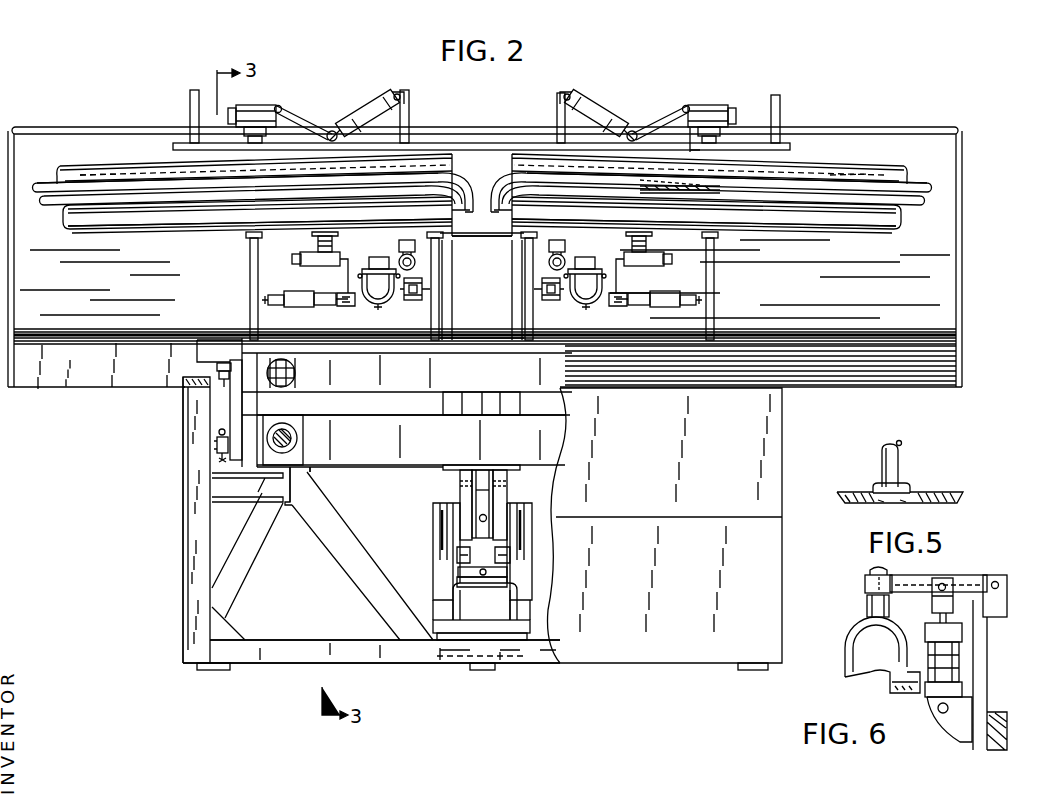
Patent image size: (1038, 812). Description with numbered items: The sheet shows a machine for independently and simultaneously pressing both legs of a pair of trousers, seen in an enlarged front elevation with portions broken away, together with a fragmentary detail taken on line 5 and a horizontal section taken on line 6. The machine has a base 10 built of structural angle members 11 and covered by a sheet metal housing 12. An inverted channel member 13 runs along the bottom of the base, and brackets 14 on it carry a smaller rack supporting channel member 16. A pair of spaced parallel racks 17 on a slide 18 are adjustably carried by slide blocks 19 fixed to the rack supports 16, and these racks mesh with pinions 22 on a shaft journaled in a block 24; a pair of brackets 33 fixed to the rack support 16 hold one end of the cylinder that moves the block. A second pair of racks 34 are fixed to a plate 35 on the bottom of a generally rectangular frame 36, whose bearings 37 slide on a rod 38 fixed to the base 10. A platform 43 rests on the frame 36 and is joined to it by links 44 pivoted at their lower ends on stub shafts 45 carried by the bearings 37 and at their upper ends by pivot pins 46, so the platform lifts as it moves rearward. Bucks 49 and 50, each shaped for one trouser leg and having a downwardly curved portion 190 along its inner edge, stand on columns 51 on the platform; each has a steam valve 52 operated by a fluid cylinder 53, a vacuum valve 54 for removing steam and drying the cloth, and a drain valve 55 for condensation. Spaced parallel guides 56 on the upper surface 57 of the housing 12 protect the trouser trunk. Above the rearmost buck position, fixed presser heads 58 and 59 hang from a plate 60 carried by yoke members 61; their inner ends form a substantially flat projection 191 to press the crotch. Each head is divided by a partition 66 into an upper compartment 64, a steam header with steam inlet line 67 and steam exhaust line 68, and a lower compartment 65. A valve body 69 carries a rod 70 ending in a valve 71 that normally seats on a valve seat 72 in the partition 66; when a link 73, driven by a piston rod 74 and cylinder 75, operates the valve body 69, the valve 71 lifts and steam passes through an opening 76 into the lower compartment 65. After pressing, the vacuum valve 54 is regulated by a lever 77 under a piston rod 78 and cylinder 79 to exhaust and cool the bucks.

In FIG. 2, the section line 5— 5 is at (755, 139).
In FIG. 2, the section line 6— 6 is at (359, 255).
In FIG. 2, the base 10 is at (168, 582).
In FIG. 2, the structural angle members 11 is at (190, 535).
In FIG. 2, the sheet metal housing 12 is at (772, 590).
In FIG. 2, the inverted channel member 13 is at (452, 645).
In FIG. 2, the brackets 14 is at (448, 609).
In FIG. 2, the rack supporting channel member 16 is at (466, 590).
In FIG. 2, the spaced parallel racks 17 is at (500, 552).
In FIG. 2, the slide 18 is at (458, 572).
In FIG. 2, the slide blocks 19 is at (484, 582).
In FIG. 2, the pinions 22 is at (478, 495).
In FIG. 2, the block 24 is at (489, 508).
In FIG. 2, the brackets 33 is at (442, 580).
In FIG. 2, the second pair of spaced parallel racks 34 is at (460, 479).
In FIG. 2, the plate 35 is at (482, 464).
In FIG. 2, the generally rectangular frame 36 is at (375, 470).
In FIG. 2, the bushings or bearings 37 is at (300, 418).
In FIG. 2, the rod 38 is at (296, 438).
In FIG. 2, the platform 43 is at (388, 383).
In FIG. 2, the links 44 is at (230, 404).
In FIG. 2, the stub shafts 45 is at (217, 445).
In FIG. 2, the pivot pins 46 is at (219, 363).
In FIG. 2, the buck 49 is at (142, 229).
In FIG. 2, the buck 50 is at (800, 228).
In FIG. 2, the columns 51 is at (250, 278).
In FIG. 2, the steam valve 52 is at (300, 264).
In FIG. 2, the fluid cylinder 53 is at (295, 307).
In FIG. 2, the vacuum valve 54 is at (380, 305).
In FIG. 6, the vacuum valve 54 is at (862, 652).
In FIG. 2, the drain valve 55 is at (405, 255).
In FIG. 2, the spaced parallel guides 56 is at (512, 300).
In FIG. 2, the upper surface 57 is at (150, 338).
In FIG. 2, the presser head 58 is at (104, 164).
In FIG. 2, the presser head 59 is at (878, 164).
In FIG. 2, the plate 60 is at (481, 143).
In FIG. 2, the brackets or yoke members 61 is at (190, 96).
In FIG. 2, the upper compartment 64 is at (668, 178).
In FIG. 2, the lower compartment 65 is at (698, 190).
In FIG. 2, the partition 66 is at (676, 185).
In FIG. 5, the partition 66 is at (956, 492).
In FIG. 2, the steam inlet line 67 is at (350, 193).
In FIG. 2, the steam exhaust line 68 is at (160, 170).
In FIG. 2, the valve body 69 is at (255, 110).
In FIG. 5, the rod 70 is at (896, 462).
In FIG. 5, the valve 71 is at (904, 486).
In FIG. 5, the valve seat 72 is at (906, 500).
In FIG. 2, the link 73 is at (293, 116).
In FIG. 2, the piston rod 74 is at (331, 131).
In FIG. 2, the cylinder 75 is at (366, 108).
In FIG. 5, the opening 76 is at (878, 500).
In FIG. 6, the lever 77 is at (922, 578).
In FIG. 6, the piston rod 78 is at (955, 622).
In FIG. 6, the cylinder 79 is at (960, 660).
In FIG. 2, the downwardly curved portion 190 is at (482, 235).
In FIG. 2, the substantially flat projection 191 is at (485, 198).